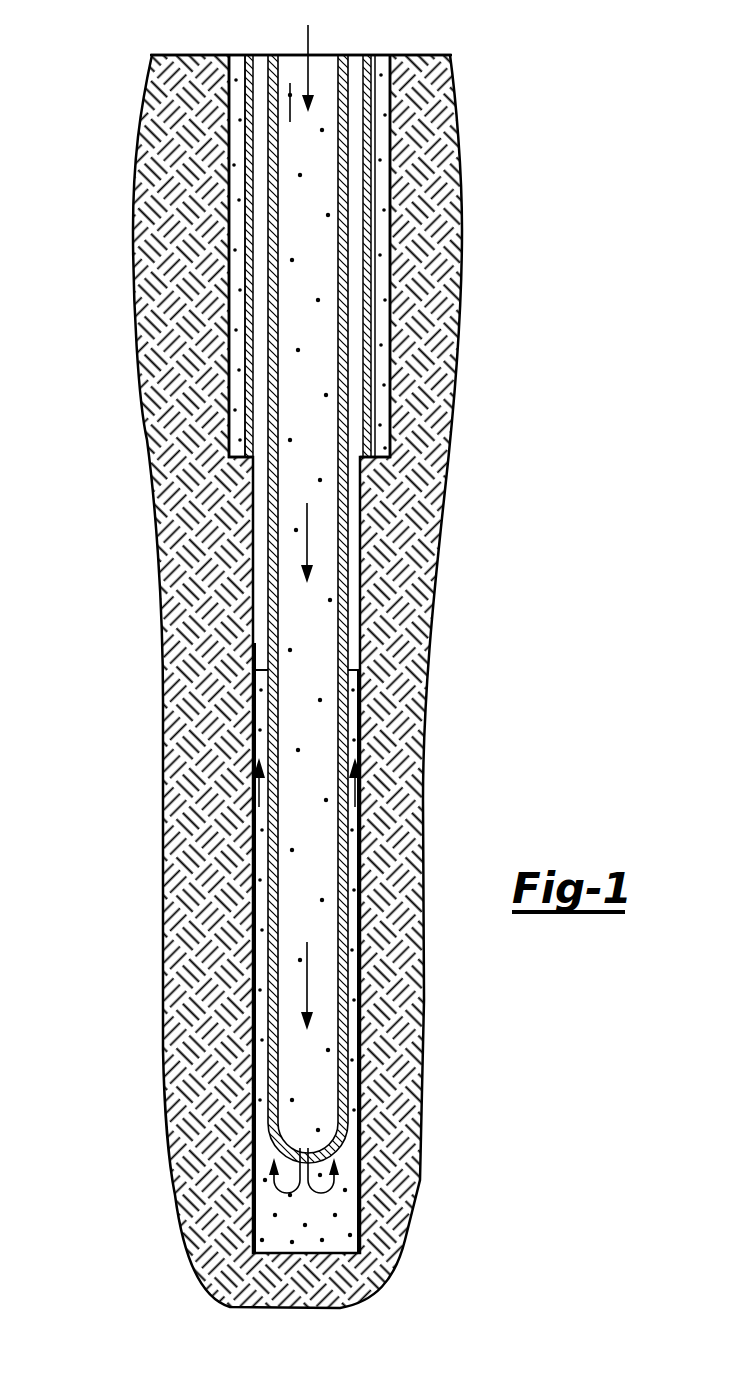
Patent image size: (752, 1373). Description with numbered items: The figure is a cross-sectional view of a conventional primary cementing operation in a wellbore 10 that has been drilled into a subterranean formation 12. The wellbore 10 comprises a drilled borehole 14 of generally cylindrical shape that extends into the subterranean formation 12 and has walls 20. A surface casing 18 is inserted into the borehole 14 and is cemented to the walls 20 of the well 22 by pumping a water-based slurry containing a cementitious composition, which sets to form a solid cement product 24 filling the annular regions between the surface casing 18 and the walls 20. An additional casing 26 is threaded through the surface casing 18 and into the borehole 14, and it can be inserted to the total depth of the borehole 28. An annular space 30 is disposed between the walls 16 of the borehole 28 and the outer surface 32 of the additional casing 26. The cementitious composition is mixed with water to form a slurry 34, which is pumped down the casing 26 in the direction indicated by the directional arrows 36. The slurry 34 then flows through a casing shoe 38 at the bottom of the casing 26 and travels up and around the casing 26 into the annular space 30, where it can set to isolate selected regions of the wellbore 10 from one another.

The wellbore 10 is at (286, 659).
The subterranean formation 12 is at (181, 1052).
The drilled borehole 14 is at (387, 456).
The walls of the borehole 16 is at (252, 902).
The surface casing 18 is at (367, 203).
The walls 20 is at (392, 348).
The well 22 is at (229, 222).
The solid cement product 24 is at (382, 295).
The additional casing 26 is at (347, 640).
The borehole 28 is at (360, 1230).
The annular space 30 is at (262, 612).
The outer surface 32 is at (255, 642).
The slurry 34 is at (288, 55).
The directional arrows 36 is at (312, 47).
The casing shoe 38 is at (347, 1080).